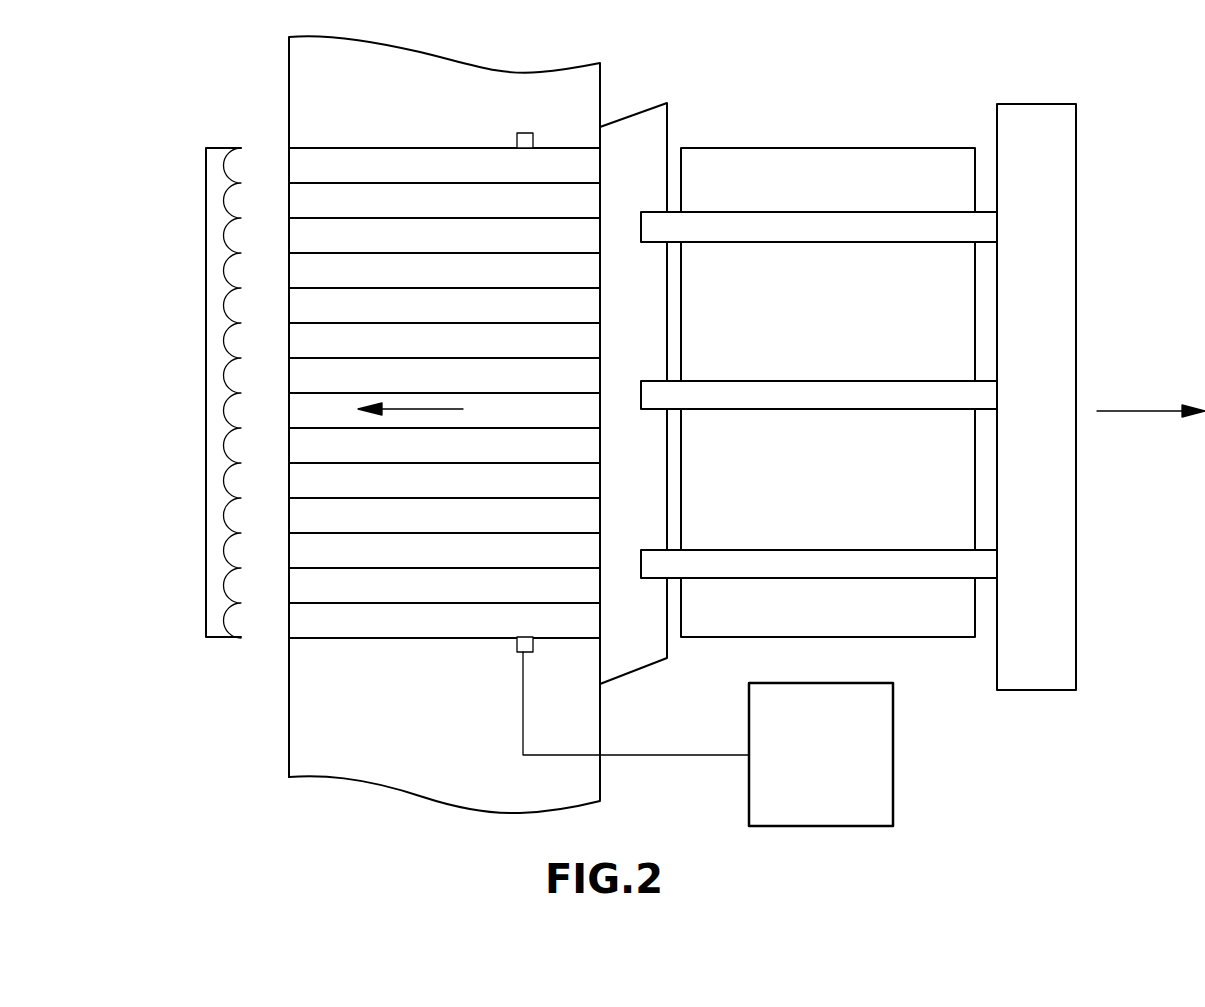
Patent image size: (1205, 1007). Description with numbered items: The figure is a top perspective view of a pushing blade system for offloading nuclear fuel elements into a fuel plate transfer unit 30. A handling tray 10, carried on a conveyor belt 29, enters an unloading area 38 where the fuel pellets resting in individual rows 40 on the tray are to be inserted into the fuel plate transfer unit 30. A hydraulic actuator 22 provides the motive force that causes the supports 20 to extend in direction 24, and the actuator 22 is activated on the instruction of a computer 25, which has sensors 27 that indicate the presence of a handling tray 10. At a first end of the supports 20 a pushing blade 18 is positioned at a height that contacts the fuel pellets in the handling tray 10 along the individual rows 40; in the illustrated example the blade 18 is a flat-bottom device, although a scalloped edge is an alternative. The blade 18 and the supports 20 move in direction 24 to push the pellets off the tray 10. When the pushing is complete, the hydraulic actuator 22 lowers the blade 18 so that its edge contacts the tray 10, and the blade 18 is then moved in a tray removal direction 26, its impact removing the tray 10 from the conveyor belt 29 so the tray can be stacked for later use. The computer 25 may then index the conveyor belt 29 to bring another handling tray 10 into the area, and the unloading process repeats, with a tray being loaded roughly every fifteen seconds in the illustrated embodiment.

The handling tray 10 is at (440, 144).
The pushing blade 18 is at (635, 653).
The supports 20 is at (870, 218).
The hydraulic actuator 22 is at (1076, 637).
The direction 24 is at (431, 412).
The computer 25 is at (833, 765).
The tray removal direction 26 is at (1151, 398).
The sensors 27 is at (520, 132).
The conveyor belt 29 is at (289, 710).
The fuel plate transfer unit 30 is at (205, 150).
The unloading area 38 is at (790, 88).
The individual rows 40 is at (302, 233).